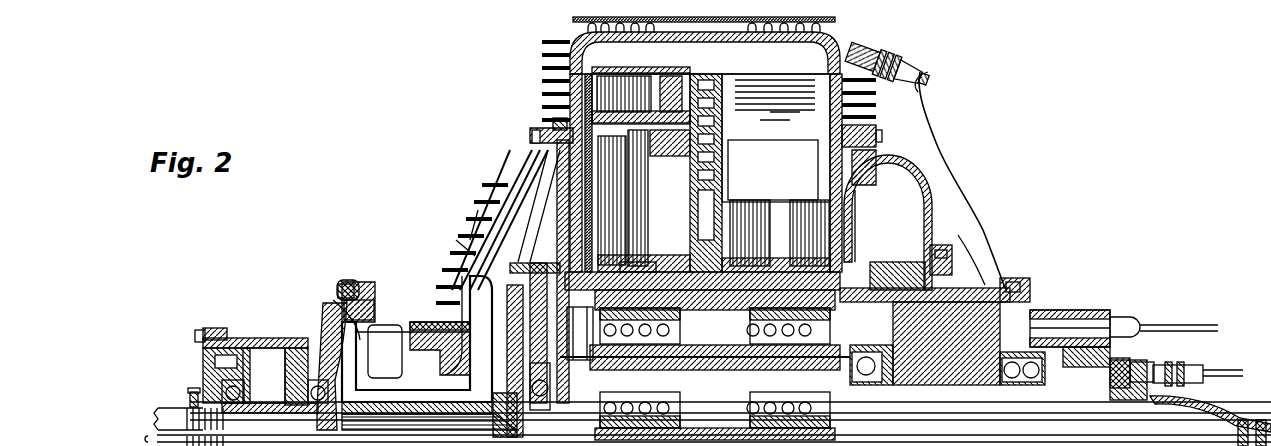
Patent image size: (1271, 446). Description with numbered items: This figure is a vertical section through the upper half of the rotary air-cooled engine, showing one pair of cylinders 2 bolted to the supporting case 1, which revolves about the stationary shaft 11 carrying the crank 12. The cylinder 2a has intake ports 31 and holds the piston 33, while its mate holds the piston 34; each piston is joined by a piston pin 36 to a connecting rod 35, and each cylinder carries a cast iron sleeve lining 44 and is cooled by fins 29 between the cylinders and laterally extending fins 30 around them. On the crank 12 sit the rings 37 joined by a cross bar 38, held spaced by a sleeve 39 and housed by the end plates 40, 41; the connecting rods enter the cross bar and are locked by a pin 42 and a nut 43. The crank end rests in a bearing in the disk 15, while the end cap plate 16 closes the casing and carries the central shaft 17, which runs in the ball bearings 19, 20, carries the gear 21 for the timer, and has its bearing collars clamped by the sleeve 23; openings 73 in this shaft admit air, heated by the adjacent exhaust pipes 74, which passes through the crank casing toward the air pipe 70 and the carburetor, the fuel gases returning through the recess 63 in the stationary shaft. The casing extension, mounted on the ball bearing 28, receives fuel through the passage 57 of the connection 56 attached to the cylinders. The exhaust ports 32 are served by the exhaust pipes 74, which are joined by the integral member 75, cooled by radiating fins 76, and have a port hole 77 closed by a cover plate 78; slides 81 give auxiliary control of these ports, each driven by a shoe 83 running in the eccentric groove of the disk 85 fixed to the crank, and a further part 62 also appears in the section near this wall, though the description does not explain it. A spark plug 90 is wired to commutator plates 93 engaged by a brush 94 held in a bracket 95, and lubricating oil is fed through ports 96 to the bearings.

The supporting case 1 is at (905, 236).
The cylinders 2 is at (709, 153).
The cylinder 2a is at (748, 212).
The shaft 11 is at (947, 343).
The crank 12 is at (702, 352).
The disk 15 is at (462, 300).
The end cap plate 16 is at (455, 330).
The central shaft 17 is at (323, 347).
The ball bearing 19 is at (307, 352).
The ball bearing 20 is at (237, 347).
The gear 21 is at (290, 375).
The sleeve 23 is at (190, 397).
The ball bearing 28 is at (1060, 374).
The fins 29 is at (736, 132).
The laterally extending fins 30 is at (922, 104).
The intake ports 31 is at (882, 138).
The exhaust ports 32 is at (536, 140).
The piston 33 is at (773, 169).
The piston 34 is at (659, 198).
The connecting rod 35 is at (600, 234).
The piston pin 36 is at (615, 130).
The rings 37 is at (650, 264).
The cross bar 38 is at (765, 262).
The sleeve 39 is at (715, 413).
The end plate 40 is at (897, 282).
The end plate 41 is at (454, 325).
The pin 42 is at (950, 290).
The nut 43 is at (960, 260).
The sleeve lining 44 is at (992, 180).
The connection 56 is at (915, 170).
The passage 57 is at (960, 254).
The partition 62 is at (552, 262).
The recess 63 is at (1150, 438).
The air pipe 70 is at (1252, 421).
The openings 73 is at (400, 396).
The exhaust pipes 74 is at (464, 220).
The member 75 is at (418, 320).
The radiating fins 76 is at (458, 246).
The port hole 77 is at (492, 178).
The cover plate 78 is at (500, 172).
The slides 81 is at (533, 293).
The shoe 83 is at (429, 408).
The disk 85 is at (440, 348).
The spark plug 90 is at (905, 68).
The commutator plates 93 is at (1060, 294).
The brush 94 is at (1088, 325).
The bracket 95 is at (1194, 330).
The ports 96 is at (1208, 374).